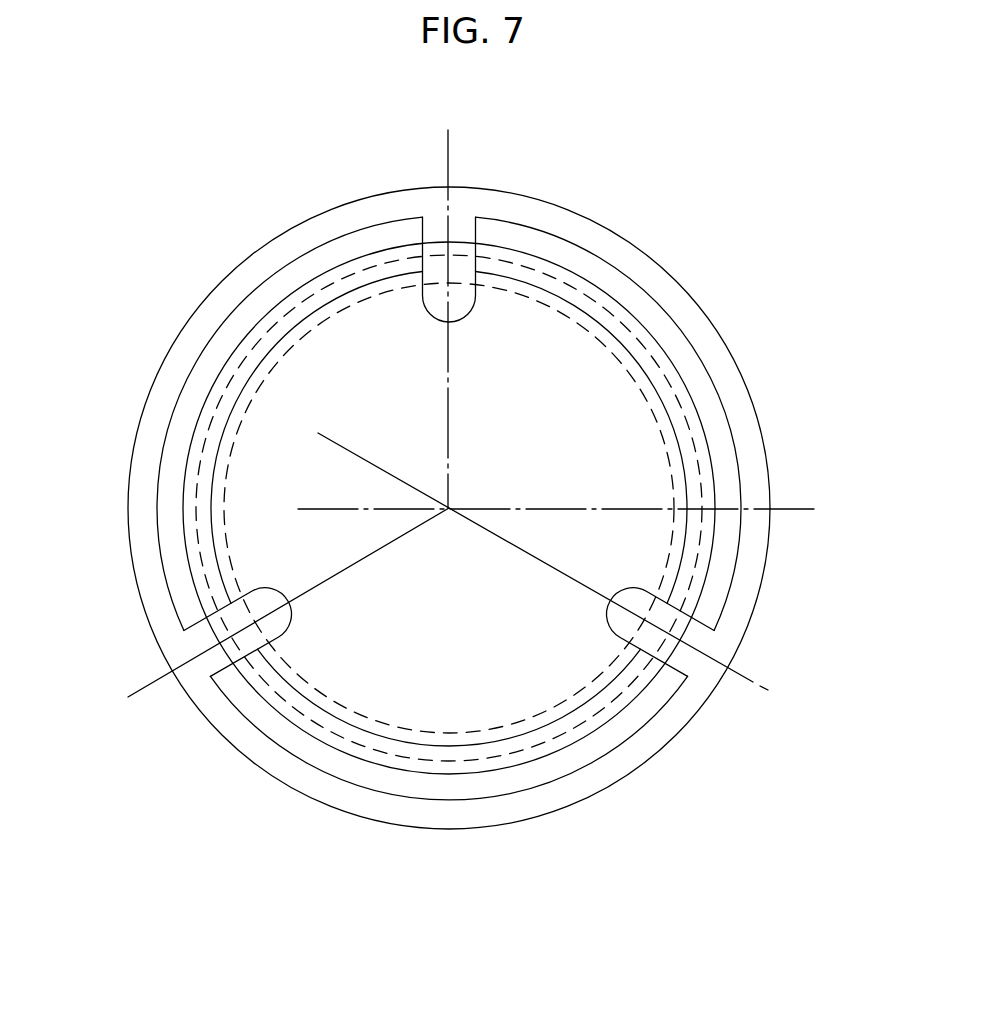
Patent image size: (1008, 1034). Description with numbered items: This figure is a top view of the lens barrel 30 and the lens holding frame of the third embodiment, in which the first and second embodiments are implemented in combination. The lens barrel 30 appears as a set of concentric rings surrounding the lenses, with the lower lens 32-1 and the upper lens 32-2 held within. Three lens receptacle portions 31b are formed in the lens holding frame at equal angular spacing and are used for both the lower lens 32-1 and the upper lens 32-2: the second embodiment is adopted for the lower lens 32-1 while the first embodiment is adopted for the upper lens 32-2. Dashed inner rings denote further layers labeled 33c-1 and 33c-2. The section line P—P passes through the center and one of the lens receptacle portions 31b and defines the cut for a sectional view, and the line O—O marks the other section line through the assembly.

The lens barrel 30 is at (692, 207).
The lens receptacle portion 31b is at (458, 298).
The lower lens 32-1 is at (678, 442).
The upper lens 32-2 is at (715, 482).
The first adhesive layer 33c-1 is at (623, 317).
The second adhesive layer 33c-2 is at (695, 375).
The section line P— P is at (342, 445).
The section line O— O is at (325, 512).